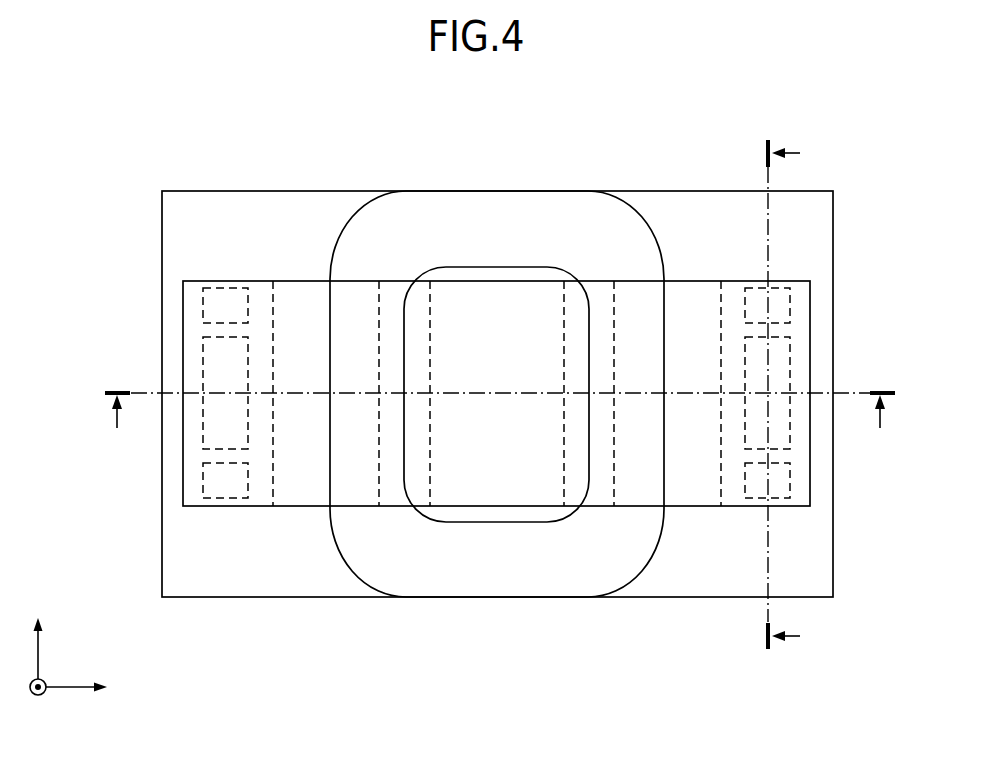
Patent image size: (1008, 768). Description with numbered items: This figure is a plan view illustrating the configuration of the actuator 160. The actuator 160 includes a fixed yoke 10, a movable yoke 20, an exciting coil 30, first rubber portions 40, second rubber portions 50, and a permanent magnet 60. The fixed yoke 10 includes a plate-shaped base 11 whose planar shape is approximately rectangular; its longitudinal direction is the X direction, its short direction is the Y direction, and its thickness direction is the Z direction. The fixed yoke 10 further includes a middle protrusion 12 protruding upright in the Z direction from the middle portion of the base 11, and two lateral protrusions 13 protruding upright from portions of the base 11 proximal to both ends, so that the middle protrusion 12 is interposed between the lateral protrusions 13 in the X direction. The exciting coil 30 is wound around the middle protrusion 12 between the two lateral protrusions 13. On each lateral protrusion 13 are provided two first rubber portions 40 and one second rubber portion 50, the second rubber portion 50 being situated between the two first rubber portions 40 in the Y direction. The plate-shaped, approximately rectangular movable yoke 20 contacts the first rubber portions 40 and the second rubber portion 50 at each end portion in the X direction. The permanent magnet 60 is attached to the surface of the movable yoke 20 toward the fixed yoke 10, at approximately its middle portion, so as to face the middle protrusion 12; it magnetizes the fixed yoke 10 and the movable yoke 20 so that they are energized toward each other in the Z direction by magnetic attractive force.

The actuator 160 is at (850, 155).
The fixed yoke 10 is at (314, 208).
The base 11 is at (320, 582).
The middle protrusion 12 is at (497, 495).
The lateral protrusions 13 is at (262, 493).
The movable yoke 20 is at (693, 492).
The exciting coil 30 is at (499, 208).
The first rubber portions 40 is at (213, 310).
The second rubber portions 50 is at (213, 365).
The permanent magnet 60 is at (393, 495).